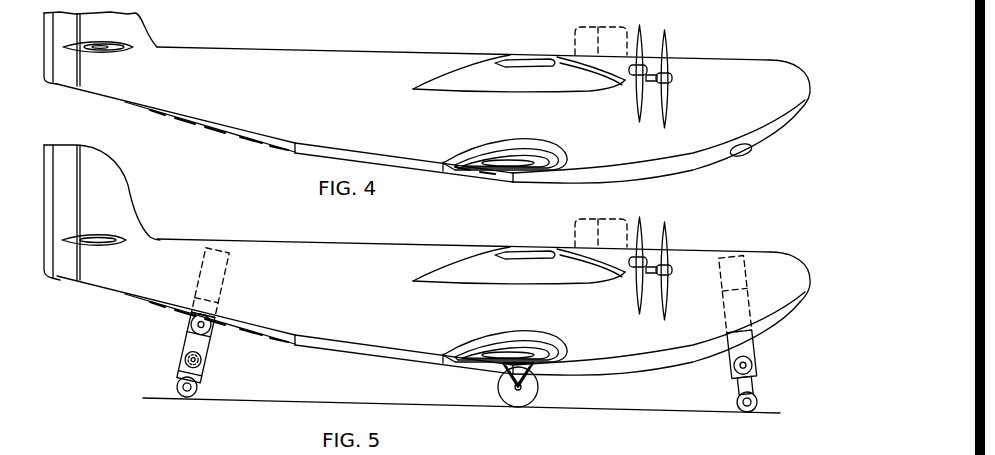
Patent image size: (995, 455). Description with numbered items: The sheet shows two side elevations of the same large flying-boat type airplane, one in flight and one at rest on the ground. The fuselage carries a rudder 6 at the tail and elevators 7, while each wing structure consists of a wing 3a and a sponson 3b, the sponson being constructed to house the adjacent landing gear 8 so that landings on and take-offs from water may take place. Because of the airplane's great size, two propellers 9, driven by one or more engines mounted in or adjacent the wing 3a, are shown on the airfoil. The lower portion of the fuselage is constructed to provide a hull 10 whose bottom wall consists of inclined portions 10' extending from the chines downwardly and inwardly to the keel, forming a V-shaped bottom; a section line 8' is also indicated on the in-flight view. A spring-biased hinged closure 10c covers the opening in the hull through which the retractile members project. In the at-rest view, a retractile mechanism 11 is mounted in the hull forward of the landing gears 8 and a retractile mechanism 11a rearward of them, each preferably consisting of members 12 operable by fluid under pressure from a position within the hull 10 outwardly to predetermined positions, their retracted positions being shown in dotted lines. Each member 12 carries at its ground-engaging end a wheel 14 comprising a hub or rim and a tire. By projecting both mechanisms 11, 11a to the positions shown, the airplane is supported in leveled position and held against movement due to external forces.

In FIG. 4, the wing 3a is at (492, 83).
In FIG. 5, the wing 3a is at (519, 265).
In FIG. 4, the sponson 3b is at (512, 142).
In FIG. 5, the sponson 3b is at (505, 346).
In FIG. 5, the rudder 6 is at (63, 150).
In FIG. 4, the elevators 7 is at (85, 52).
In FIG. 5, the elevators 7 is at (78, 235).
In FIG. 4, the landing gears 8 is at (477, 102).
In FIG. 5, the landing gears 8 is at (531, 385).
In FIG. 4, the section line 8' is at (179, 145).
In FIG. 4, the propellers 9 is at (658, 115).
In FIG. 5, the propellers 9 is at (649, 278).
In FIG. 4, the hull 10 is at (552, 130).
In FIG. 4, the inclined portions 10' is at (547, 152).
In FIG. 4, the hinged closure 10c is at (750, 153).
In FIG. 5, the retractile mechanism 11 is at (776, 369).
In FIG. 5, the retractile mechanism 11a is at (238, 364).
In FIG. 5, the member 12 is at (187, 338).
In FIG. 5, the wheel 14 is at (758, 404).